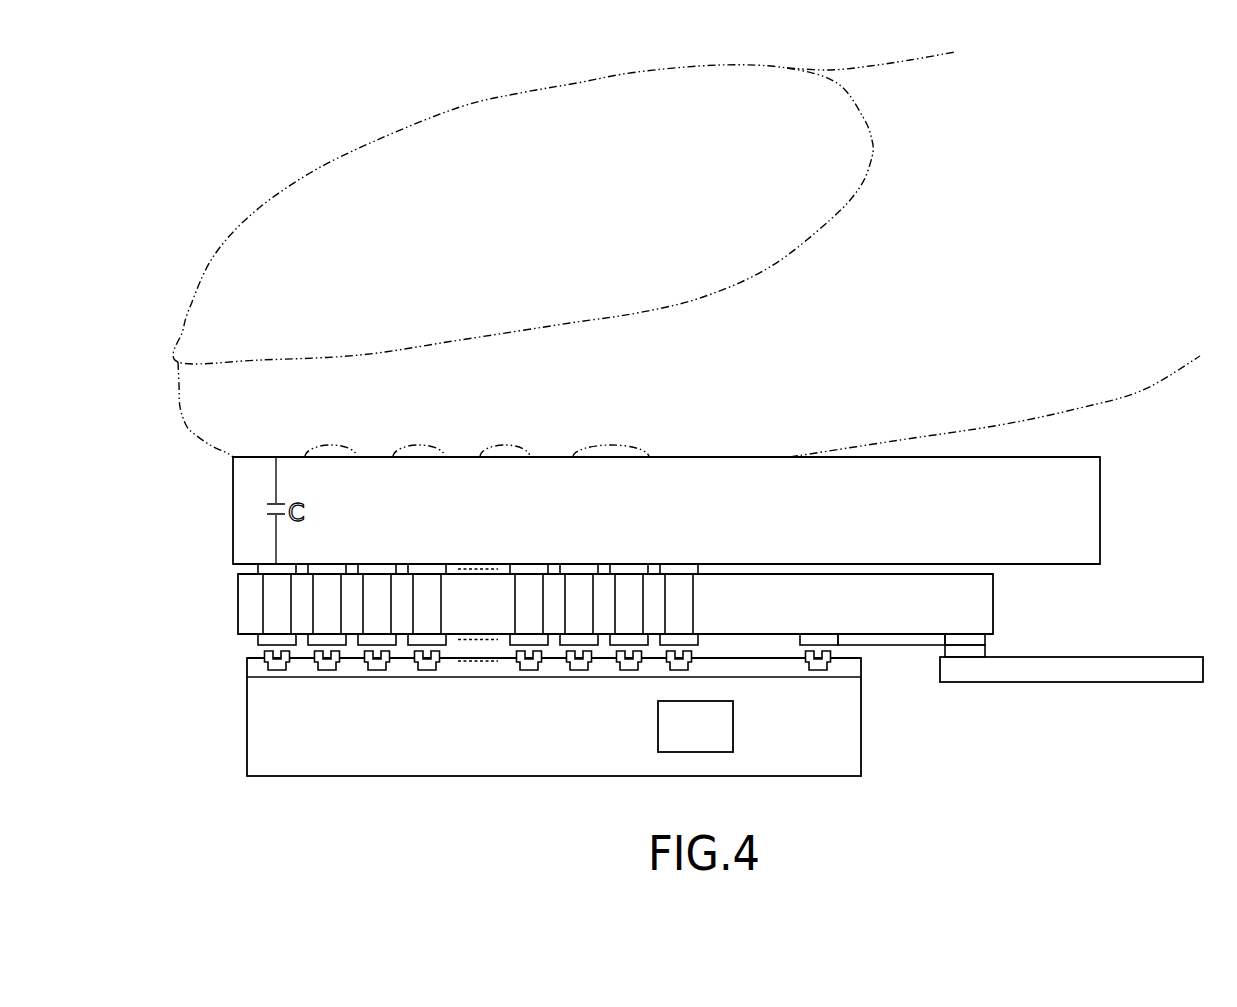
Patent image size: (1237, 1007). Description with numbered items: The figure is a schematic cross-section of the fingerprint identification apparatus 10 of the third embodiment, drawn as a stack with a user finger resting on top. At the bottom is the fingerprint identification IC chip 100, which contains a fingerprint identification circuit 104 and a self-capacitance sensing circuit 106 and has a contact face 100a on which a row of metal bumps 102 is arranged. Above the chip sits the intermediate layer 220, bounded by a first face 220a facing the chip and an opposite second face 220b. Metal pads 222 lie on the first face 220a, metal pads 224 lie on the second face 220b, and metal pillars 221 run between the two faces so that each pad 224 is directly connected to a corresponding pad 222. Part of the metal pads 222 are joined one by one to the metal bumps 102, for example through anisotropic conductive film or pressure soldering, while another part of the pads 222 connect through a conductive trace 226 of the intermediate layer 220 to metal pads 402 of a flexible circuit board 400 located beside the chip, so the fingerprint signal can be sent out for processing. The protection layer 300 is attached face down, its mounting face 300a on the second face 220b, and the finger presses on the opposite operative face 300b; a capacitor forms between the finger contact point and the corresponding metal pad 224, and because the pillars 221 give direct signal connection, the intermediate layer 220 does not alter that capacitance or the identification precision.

The fingerprint identification apparatus 10 is at (1185, 422).
The fingerprint identification IC chip 100 is at (861, 718).
The contact face 100a is at (247, 656).
The metal bumps 102 is at (273, 664).
The fingerprint identification circuit 104 is at (453, 763).
The self-capacitance sensing circuit 106 is at (697, 745).
The intermediate layer 220 is at (993, 603).
The first face 220a is at (252, 634).
The second face 220b is at (238, 575).
The metal pillars 221 is at (685, 602).
The metal pads 222 is at (275, 636).
The metal pads 224 is at (272, 566).
The conductive trace 226 is at (892, 640).
The protection layer 300 is at (1100, 510).
The mounting face 300a is at (250, 565).
The operative face 300b is at (233, 457).
The flexible circuit board 400 is at (1115, 668).
The metal pads 402 is at (988, 651).